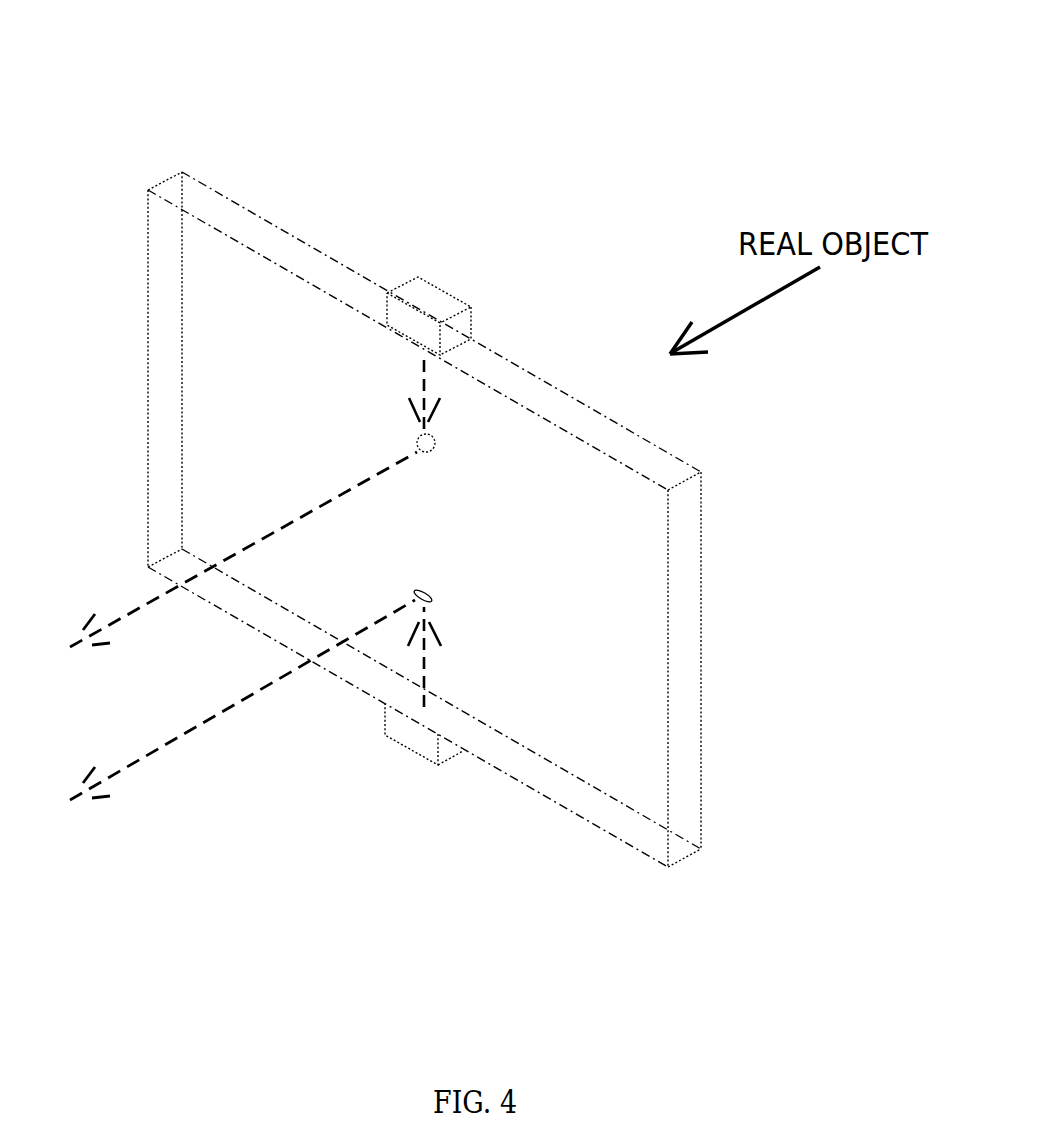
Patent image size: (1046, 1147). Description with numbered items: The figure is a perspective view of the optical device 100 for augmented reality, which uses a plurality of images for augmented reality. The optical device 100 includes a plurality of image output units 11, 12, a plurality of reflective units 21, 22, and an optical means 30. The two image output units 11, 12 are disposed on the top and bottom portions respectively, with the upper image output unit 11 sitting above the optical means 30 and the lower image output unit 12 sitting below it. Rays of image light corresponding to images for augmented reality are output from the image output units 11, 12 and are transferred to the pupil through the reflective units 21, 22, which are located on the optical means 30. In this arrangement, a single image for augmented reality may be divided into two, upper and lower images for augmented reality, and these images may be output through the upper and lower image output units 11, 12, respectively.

The optical device for augmented reality 100 is at (602, 220).
The image output unit 11 is at (428, 296).
The image output unit 12 is at (408, 750).
The reflective unit 21 is at (434, 449).
The reflective unit 22 is at (430, 602).
The optical means 30 is at (683, 635).